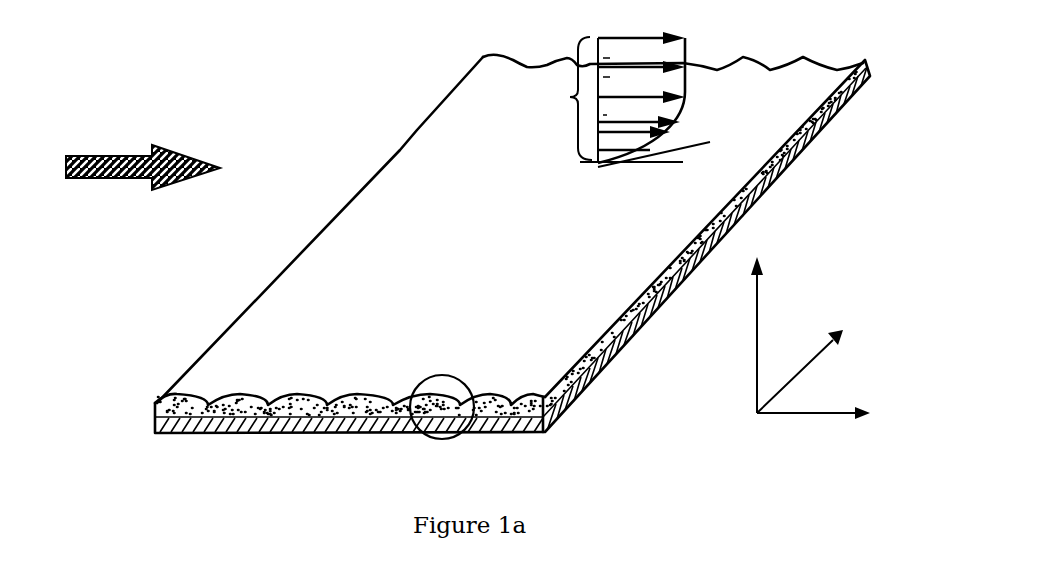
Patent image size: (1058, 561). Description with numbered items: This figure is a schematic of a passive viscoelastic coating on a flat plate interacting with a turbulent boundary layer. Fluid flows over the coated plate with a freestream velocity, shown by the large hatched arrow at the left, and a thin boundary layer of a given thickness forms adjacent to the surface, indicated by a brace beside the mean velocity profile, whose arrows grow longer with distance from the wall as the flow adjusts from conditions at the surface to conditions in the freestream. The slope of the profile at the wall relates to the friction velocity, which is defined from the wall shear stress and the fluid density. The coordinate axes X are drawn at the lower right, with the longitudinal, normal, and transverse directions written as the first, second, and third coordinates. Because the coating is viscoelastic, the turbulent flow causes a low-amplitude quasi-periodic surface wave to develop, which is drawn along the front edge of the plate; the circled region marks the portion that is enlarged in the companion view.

The coordinate axes X is at (819, 338).